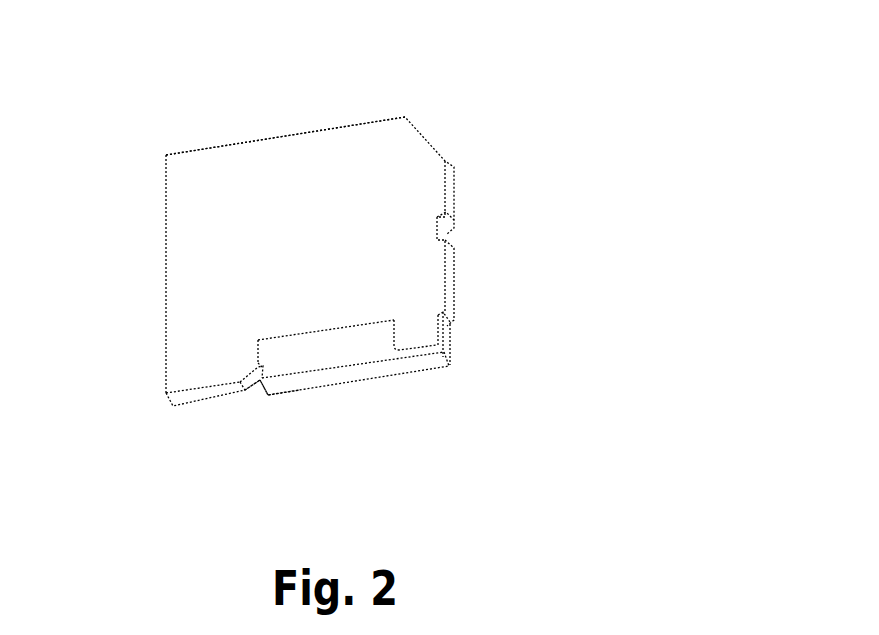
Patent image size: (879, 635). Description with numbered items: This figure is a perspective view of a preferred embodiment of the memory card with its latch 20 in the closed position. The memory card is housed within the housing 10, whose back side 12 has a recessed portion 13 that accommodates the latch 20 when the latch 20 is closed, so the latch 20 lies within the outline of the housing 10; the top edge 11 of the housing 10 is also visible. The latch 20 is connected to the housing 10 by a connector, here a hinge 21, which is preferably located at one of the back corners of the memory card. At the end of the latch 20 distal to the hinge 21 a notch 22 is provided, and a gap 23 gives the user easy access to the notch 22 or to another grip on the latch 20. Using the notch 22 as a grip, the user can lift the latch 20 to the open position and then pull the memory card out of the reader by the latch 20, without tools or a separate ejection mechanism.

The housing 10 is at (182, 217).
The top edge 11 is at (332, 128).
The back side 12 is at (203, 403).
The recessed portion 13 is at (351, 322).
The latch 20 is at (332, 350).
The hinge 21 is at (418, 328).
The notch 22 is at (263, 366).
The gap 23 is at (258, 397).